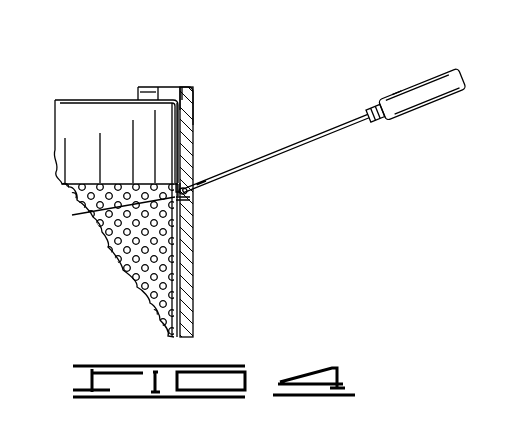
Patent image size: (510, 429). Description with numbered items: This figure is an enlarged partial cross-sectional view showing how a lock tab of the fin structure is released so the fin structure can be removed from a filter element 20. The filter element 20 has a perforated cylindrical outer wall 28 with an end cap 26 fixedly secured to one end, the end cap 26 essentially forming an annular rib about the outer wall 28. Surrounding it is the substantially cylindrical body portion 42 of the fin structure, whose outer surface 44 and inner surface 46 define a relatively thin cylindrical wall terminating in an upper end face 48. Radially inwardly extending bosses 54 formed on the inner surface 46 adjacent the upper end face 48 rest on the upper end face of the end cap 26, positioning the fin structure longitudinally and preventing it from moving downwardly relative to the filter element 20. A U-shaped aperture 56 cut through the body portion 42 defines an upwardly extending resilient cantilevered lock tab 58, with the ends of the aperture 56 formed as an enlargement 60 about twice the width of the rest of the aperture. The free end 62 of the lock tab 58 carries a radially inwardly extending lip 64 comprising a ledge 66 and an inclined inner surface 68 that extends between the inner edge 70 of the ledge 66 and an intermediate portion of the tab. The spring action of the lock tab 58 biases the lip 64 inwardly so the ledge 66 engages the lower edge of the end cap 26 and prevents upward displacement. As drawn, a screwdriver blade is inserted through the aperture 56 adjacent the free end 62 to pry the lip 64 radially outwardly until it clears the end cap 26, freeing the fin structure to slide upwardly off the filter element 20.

The filter element 20 is at (152, 255).
The end cap 26 is at (87, 110).
The perforated cylindrical outer wall 28 is at (162, 265).
The body portion 42 is at (192, 106).
The outer surface 44 is at (192, 115).
The inner surface 46 is at (177, 127).
The upper end face 48 is at (185, 87).
The bosses 54 is at (143, 87).
The U-shaped aperture 56 is at (187, 191).
The lock tab 58 is at (188, 215).
The enlargement 60 is at (193, 303).
The free end 62 is at (190, 203).
The lip 64 is at (175, 183).
The ledge 66 is at (171, 183).
The inclined inner surface 68 is at (175, 225).
The inner edge 70 is at (111, 212).